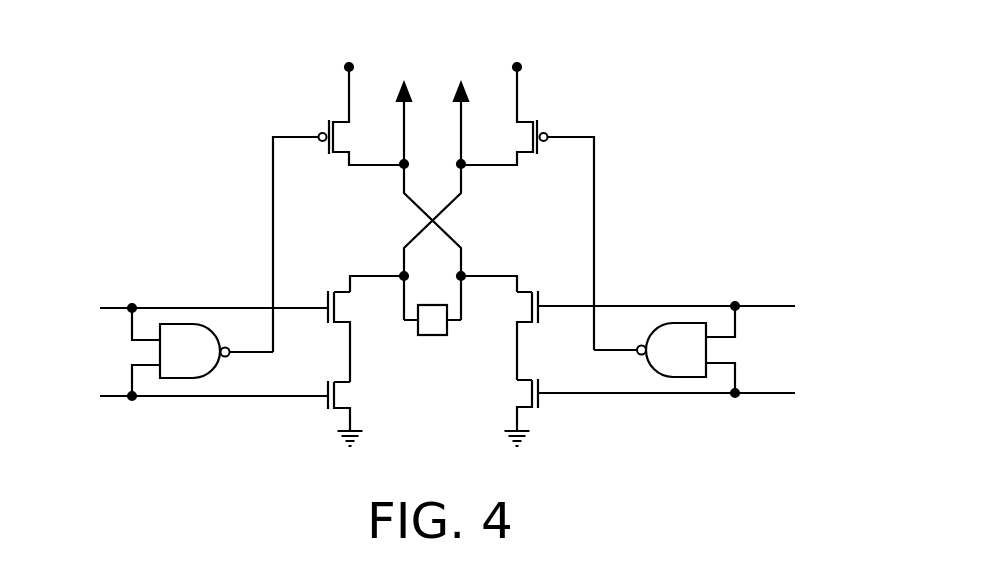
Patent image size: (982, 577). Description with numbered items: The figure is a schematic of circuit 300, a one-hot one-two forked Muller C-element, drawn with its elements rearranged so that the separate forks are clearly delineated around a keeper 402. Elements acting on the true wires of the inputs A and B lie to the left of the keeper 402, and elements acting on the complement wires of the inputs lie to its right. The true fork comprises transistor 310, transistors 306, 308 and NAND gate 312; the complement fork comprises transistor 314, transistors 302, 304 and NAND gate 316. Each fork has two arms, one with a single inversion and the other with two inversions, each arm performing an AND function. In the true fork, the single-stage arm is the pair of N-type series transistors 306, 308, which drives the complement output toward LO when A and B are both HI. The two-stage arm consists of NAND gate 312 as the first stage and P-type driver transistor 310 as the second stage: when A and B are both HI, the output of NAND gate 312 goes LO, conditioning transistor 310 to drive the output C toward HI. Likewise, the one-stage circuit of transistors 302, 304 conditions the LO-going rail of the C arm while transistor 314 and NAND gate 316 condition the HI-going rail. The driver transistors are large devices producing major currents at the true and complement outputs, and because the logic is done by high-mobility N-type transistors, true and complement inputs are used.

The circuit 300 is at (629, 82).
The transistor 302 is at (542, 301).
The transistor 304 is at (542, 388).
The transistor 306 is at (327, 302).
The transistor 308 is at (327, 389).
The P-type driver transistor 310 is at (319, 131).
The NAND gate 312 is at (210, 330).
The transistor 314 is at (548, 131).
The NAND gate 316 is at (645, 370).
The keeper 402 is at (418, 323).